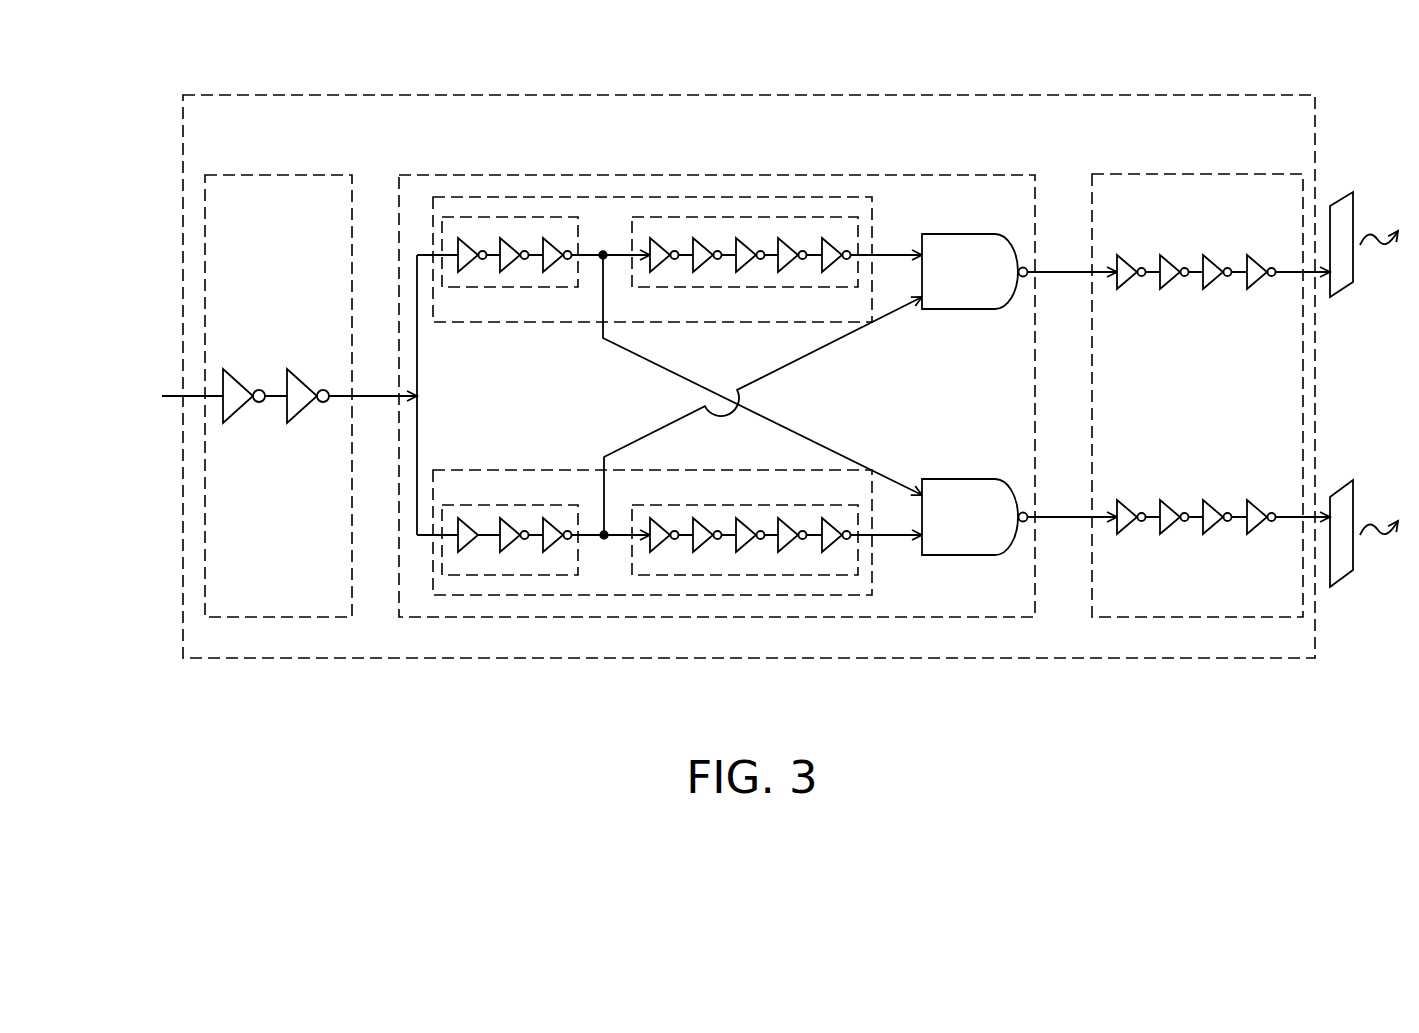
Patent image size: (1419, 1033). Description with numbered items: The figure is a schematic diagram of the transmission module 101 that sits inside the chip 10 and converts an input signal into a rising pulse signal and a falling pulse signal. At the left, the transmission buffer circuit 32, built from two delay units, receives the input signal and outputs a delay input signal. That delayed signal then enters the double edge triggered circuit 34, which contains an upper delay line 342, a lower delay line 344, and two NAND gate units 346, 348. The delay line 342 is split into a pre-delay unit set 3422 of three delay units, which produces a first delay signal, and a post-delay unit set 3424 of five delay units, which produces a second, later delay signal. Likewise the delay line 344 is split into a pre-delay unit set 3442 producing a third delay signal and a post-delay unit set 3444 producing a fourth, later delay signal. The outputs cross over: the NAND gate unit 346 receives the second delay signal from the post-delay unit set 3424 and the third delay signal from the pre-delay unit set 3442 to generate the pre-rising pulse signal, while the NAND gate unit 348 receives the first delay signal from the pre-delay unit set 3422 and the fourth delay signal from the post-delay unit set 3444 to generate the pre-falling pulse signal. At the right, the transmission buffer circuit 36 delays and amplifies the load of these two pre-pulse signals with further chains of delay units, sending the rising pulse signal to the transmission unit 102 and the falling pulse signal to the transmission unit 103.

The chip 10 is at (1287, 736).
The transmission module 101 is at (748, 95).
The transmission unit 102 is at (1335, 206).
The transmission unit 103 is at (1335, 497).
The transmission buffer circuit 32 is at (270, 175).
The double edge triggered circuit 34 is at (716, 175).
The transmission buffer circuit 36 is at (1197, 174).
The delay line 342 is at (497, 197).
The pre-delay unit set 3422 is at (533, 217).
The post-delay unit set 3424 is at (757, 217).
The delay line 344 is at (659, 595).
The pre-delay unit set 3442 is at (533, 575).
The post-delay unit set 3444 is at (743, 575).
The NAND gate unit 346 is at (967, 234).
The NAND gate unit 348 is at (957, 555).